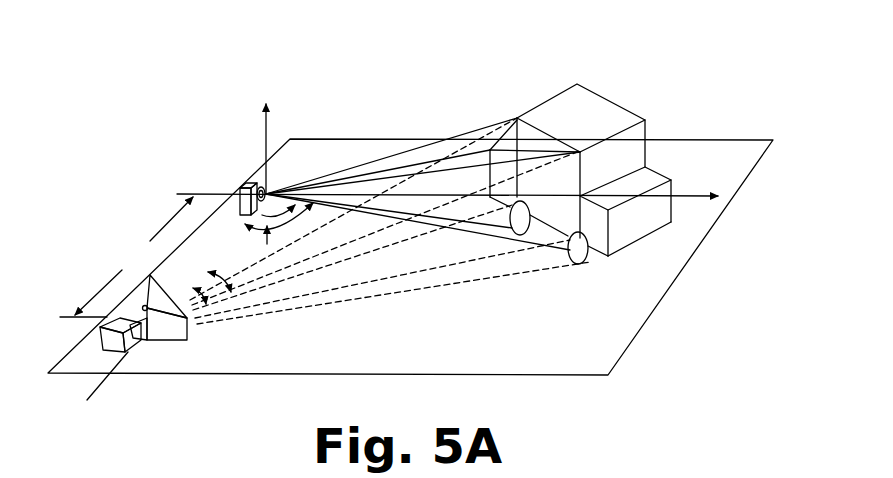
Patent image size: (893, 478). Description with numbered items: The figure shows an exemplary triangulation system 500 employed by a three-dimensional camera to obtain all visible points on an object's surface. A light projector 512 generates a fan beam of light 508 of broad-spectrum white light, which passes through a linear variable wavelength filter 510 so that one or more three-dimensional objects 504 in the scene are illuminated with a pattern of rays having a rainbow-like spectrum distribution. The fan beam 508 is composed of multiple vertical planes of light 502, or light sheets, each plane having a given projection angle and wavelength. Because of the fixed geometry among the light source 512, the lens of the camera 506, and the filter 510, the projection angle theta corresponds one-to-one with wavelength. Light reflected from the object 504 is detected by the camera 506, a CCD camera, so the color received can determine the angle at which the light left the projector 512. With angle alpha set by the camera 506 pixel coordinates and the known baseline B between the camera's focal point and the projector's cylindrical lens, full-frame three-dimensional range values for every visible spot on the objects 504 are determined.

The triangulation system 500 is at (388, 79).
The vertical planes of light 502 is at (463, 266).
The object 504 is at (623, 94).
The camera 506 is at (252, 187).
The fan beam of light 508 is at (285, 248).
The linear variable wavelength filter (LVWF) 510 is at (190, 330).
The light projector 512 is at (115, 345).